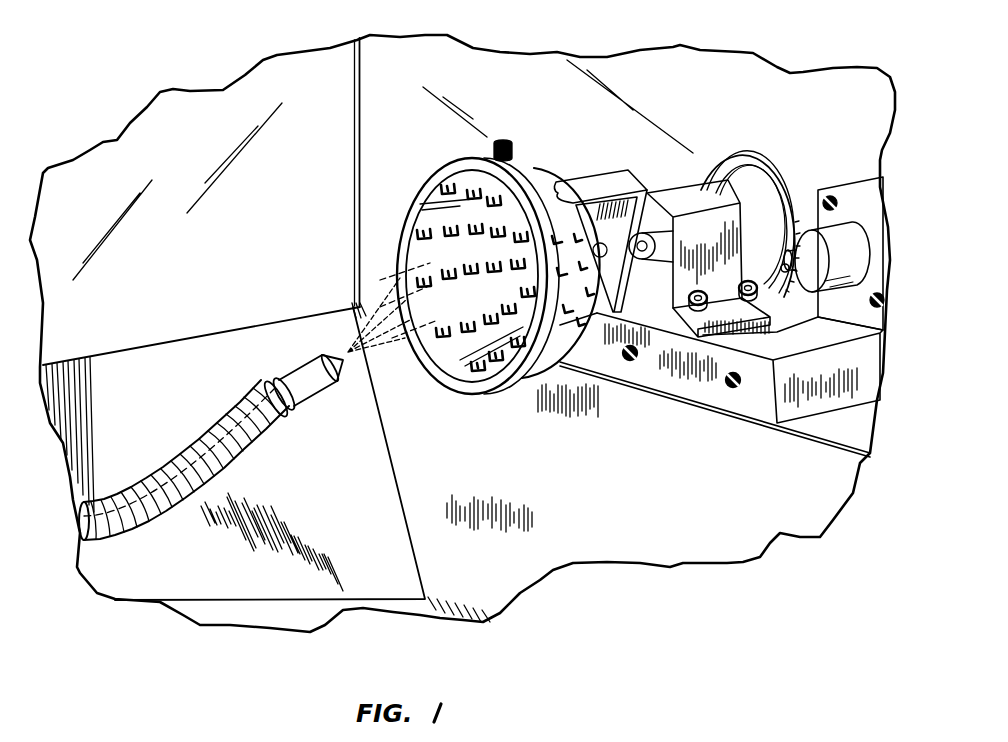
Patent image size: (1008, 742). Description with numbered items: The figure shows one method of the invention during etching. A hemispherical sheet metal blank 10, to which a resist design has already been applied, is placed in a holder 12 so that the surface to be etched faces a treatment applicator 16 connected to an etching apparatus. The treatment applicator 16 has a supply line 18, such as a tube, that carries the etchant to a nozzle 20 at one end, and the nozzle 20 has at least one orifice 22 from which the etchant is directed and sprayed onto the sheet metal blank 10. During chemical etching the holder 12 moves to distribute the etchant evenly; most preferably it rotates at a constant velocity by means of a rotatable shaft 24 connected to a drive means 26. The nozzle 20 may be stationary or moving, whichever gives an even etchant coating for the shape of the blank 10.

The sheet metal blank 10 is at (407, 223).
The holder 12 is at (623, 167).
The treatment applicator 16 is at (163, 550).
The supply line 18 is at (222, 419).
The nozzle 20 is at (293, 357).
The orifice 22 is at (358, 348).
The rotatable shaft 24 is at (632, 263).
The drive means 26 is at (789, 190).